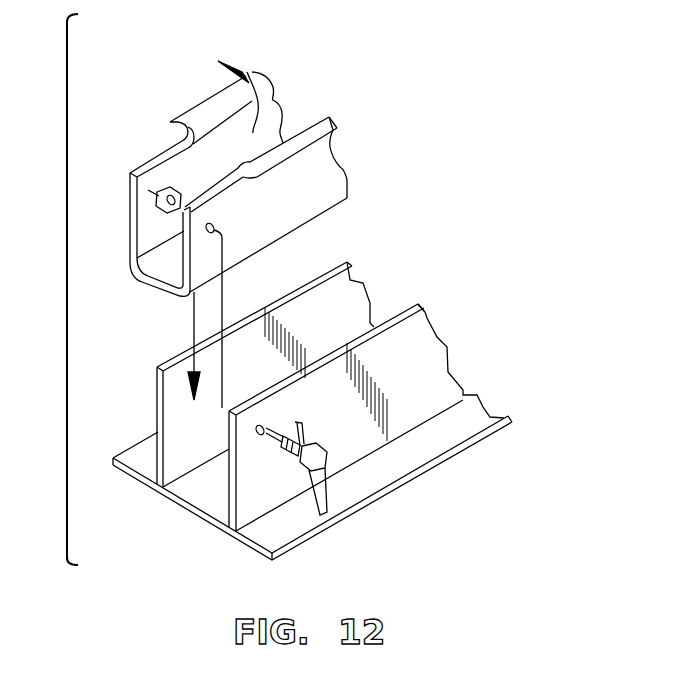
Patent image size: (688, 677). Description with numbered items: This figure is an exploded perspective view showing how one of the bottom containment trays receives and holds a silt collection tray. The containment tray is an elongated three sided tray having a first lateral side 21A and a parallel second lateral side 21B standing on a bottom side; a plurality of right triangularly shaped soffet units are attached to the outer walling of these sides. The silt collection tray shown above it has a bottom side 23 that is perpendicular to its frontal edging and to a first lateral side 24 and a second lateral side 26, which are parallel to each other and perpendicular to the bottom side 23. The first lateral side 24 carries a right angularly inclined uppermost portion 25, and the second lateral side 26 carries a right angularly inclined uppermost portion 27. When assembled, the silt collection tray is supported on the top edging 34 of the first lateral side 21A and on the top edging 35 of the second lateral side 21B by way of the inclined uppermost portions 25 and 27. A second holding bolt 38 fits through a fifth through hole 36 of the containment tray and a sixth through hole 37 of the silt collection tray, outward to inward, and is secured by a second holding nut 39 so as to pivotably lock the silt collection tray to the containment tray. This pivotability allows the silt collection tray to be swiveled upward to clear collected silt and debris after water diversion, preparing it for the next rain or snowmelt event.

The first lateral side 21A is at (448, 373).
The second lateral side 21B is at (177, 430).
The bottom side 23 is at (167, 268).
The first lateral side 24 is at (318, 170).
The right angularly inclined uppermost portion 25 is at (330, 121).
The second lateral side 26 is at (267, 127).
The right angularly inclined uppermost portion 27 is at (257, 70).
The top edging 34 is at (315, 361).
The top edging 35 is at (167, 363).
The fifth through hole 36 is at (258, 437).
The sixth through hole 37 is at (218, 228).
The second holding bolt 38 is at (327, 447).
The second holding nut 39 is at (170, 188).